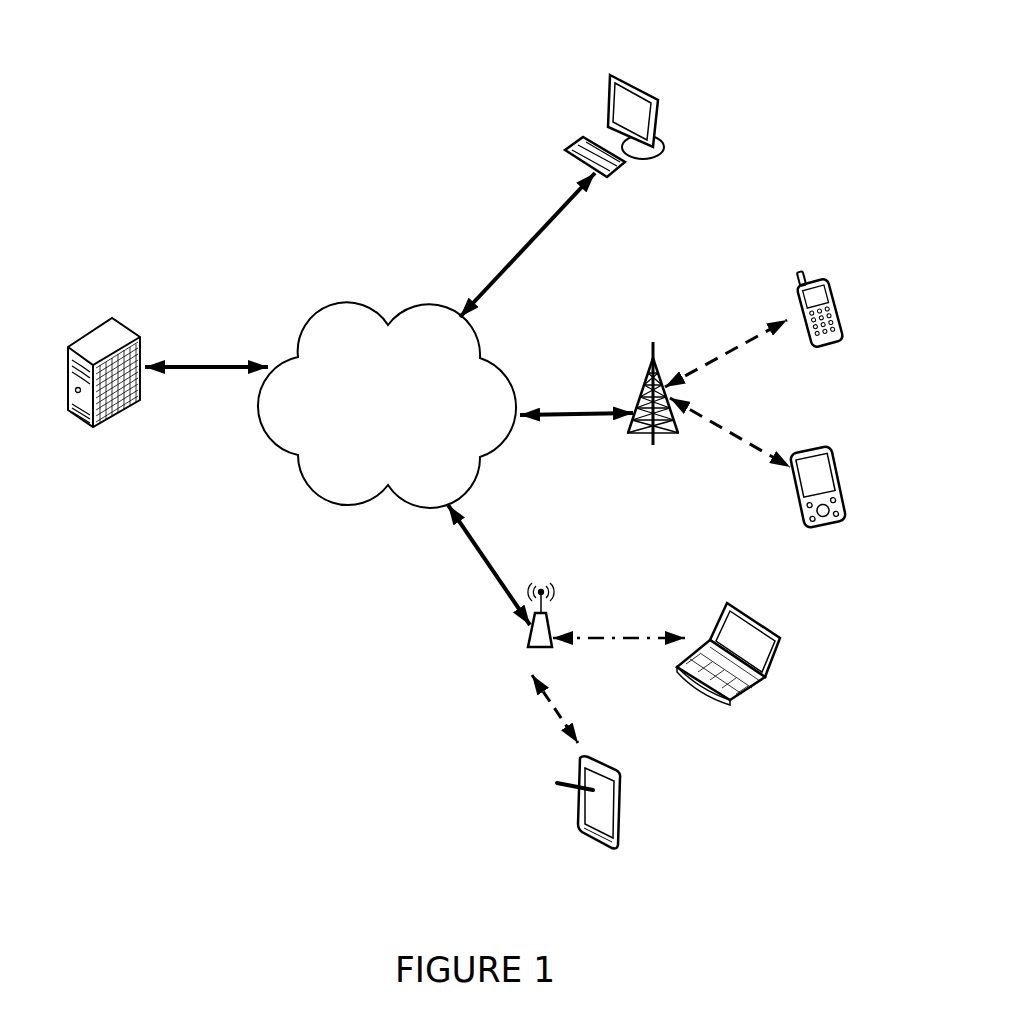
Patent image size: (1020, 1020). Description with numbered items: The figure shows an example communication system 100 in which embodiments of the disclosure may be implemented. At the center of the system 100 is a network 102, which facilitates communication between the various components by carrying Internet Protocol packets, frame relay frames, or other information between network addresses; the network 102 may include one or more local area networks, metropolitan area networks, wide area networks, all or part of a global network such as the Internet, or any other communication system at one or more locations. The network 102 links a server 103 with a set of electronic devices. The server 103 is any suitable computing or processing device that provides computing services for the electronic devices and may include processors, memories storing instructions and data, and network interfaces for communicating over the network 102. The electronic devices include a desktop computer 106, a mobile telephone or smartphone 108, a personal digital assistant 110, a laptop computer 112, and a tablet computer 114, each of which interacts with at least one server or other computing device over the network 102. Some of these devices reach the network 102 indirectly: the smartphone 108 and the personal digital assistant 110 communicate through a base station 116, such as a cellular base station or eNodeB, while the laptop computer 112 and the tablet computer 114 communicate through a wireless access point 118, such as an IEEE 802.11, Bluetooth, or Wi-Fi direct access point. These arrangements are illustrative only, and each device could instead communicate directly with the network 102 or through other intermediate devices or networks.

The communication system 100 is at (228, 168).
The network 102 is at (311, 320).
The server 103 is at (87, 337).
The desktop computer 106 is at (612, 78).
The mobile telephone or smartphone 108 is at (837, 288).
The personal digital assistant (PDA) 110 is at (833, 460).
The laptop computer 112 is at (780, 642).
The tablet computer 114 is at (623, 798).
The base station 116 is at (670, 427).
The wireless access point 118 is at (552, 622).